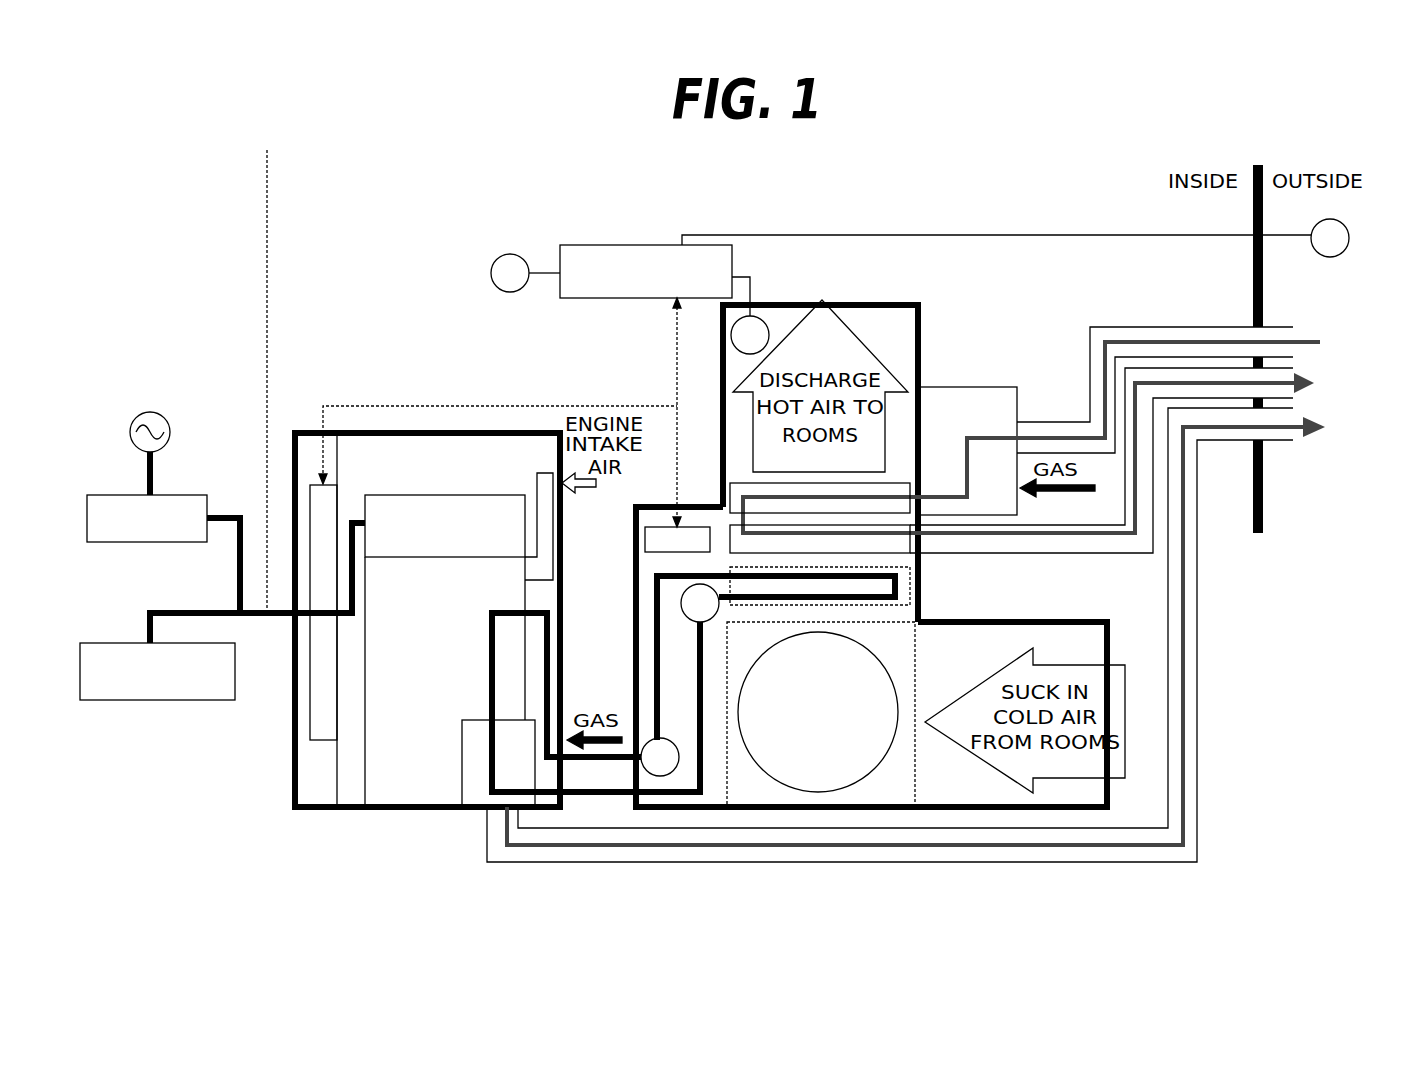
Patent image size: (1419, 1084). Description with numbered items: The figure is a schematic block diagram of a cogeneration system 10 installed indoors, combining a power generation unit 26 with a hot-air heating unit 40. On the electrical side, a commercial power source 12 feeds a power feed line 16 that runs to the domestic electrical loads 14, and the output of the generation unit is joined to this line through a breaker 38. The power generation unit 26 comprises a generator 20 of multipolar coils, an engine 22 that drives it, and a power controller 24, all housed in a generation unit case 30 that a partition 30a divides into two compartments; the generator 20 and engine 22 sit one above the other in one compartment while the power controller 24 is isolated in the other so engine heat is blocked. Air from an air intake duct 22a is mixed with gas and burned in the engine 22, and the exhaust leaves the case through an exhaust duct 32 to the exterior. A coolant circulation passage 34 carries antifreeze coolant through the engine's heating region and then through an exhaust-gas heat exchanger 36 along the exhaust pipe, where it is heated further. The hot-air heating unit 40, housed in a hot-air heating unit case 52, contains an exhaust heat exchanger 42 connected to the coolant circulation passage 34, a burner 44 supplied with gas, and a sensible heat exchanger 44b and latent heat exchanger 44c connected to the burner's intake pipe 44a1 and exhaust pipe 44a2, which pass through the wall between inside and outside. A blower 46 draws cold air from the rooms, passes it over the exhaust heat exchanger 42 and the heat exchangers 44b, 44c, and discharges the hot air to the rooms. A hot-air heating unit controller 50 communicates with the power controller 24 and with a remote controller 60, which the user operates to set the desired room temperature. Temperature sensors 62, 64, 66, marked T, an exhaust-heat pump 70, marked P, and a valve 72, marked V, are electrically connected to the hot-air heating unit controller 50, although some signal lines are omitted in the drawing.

The cogeneration system 10 is at (618, 348).
The commercial power source 12 is at (164, 419).
The electrical loads 14 is at (95, 702).
The power feed line 16 is at (220, 616).
The generator 20 is at (415, 495).
The engine 22 is at (365, 770).
The air intake duct 22a is at (560, 533).
The power controller 24 is at (310, 505).
The power generation unit 26 is at (507, 428).
The generation unit case 30 is at (423, 433).
The partition 30a is at (340, 478).
The exhaust duct 32 is at (965, 862).
The coolant circulation passage 34 is at (549, 668).
The exhaust-gas heat exchanger 36 is at (460, 775).
The breaker 38 is at (115, 543).
The hot-air heating unit 40 is at (968, 368).
The exhaust heat exchanger 42 is at (912, 592).
The burner 44 is at (990, 387).
The intake pipe 44a1 is at (1113, 327).
The exhaust pipe 44a2 is at (1280, 368).
The sensible heat exchanger 44b is at (913, 507).
The latent heat exchanger 44c is at (912, 553).
The blower 46 is at (848, 790).
The hot-air heating unit controller 50 is at (649, 517).
The hot-air heating unit case 52 is at (850, 305).
The remote controller 60 is at (660, 245).
The temperature sensors 62 is at (505, 255).
The temperature sensor 64 is at (762, 318).
The temperature sensor 66 is at (1345, 222).
The exhaust-heat pump 70 is at (641, 765).
The valve 72 is at (684, 614).